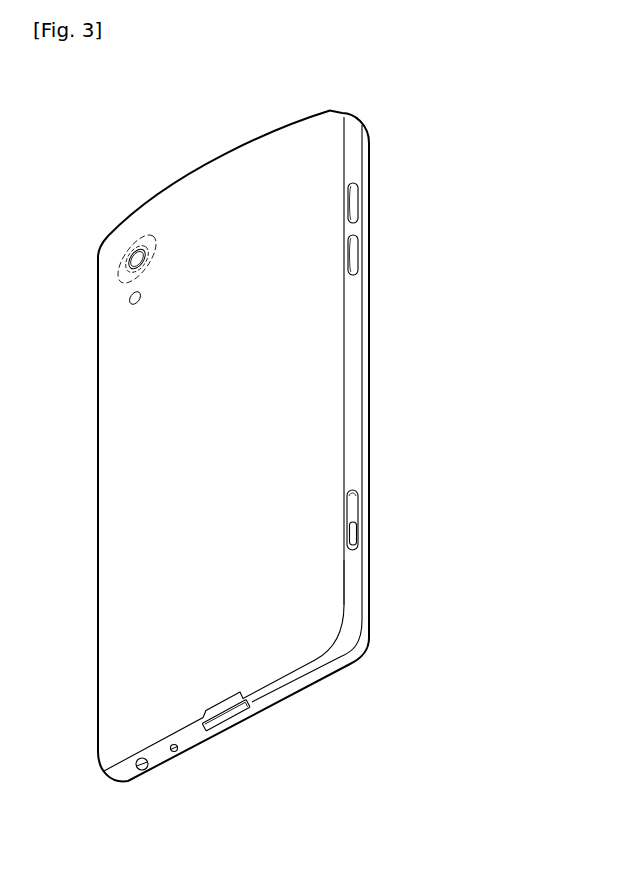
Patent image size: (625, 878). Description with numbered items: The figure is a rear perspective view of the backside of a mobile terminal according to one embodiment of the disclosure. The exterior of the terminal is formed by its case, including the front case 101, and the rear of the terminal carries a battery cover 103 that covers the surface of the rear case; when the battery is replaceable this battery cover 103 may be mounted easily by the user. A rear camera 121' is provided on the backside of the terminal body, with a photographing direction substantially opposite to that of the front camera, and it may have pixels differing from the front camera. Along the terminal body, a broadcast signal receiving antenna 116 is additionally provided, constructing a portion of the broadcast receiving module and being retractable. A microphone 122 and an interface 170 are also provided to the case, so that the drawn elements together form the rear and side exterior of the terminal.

The front case 101 is at (356, 658).
The battery cover 103 is at (320, 614).
The broadcast signal receiving antenna 116 is at (142, 770).
The camera 121' is at (128, 240).
The microphone 122 is at (174, 752).
The interface 170 is at (236, 720).